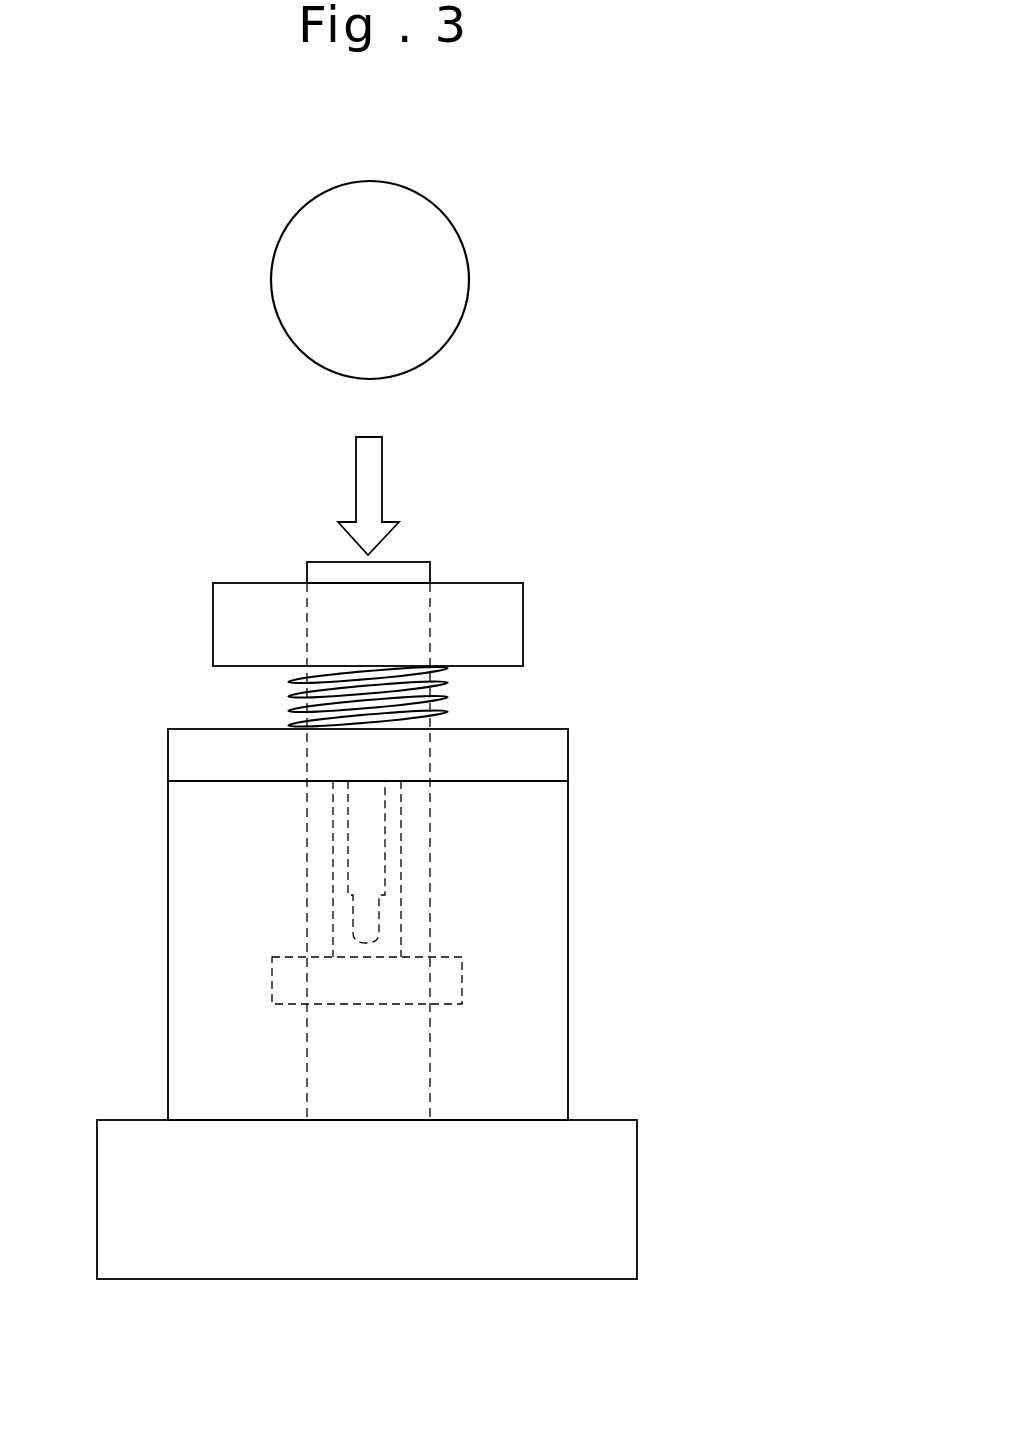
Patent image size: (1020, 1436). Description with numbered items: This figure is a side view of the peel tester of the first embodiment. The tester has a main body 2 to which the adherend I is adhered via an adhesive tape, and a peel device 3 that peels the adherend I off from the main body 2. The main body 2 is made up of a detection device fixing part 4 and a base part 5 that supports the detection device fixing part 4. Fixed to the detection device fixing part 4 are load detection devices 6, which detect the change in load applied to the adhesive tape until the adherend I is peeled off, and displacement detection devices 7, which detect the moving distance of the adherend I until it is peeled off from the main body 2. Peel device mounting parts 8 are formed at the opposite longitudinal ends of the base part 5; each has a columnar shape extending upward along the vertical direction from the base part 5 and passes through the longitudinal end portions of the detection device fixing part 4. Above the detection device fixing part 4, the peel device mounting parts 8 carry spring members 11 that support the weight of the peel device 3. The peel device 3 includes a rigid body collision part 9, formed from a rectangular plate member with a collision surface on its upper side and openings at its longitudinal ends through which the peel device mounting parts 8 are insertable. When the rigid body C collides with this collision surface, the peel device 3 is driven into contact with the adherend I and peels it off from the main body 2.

The rigid body C is at (432, 290).
The main body 2 is at (398, 924).
The peel device 3 is at (407, 797).
The detection device fixing part 4 is at (552, 756).
The base part 5 is at (582, 916).
The load detection device 6 is at (363, 873).
The displacement detection device 7 is at (338, 833).
The peel device mounting part 8 is at (320, 572).
The rigid body collision part 9 is at (414, 624).
The spring member 11 is at (287, 713).
The adherend I is at (285, 980).